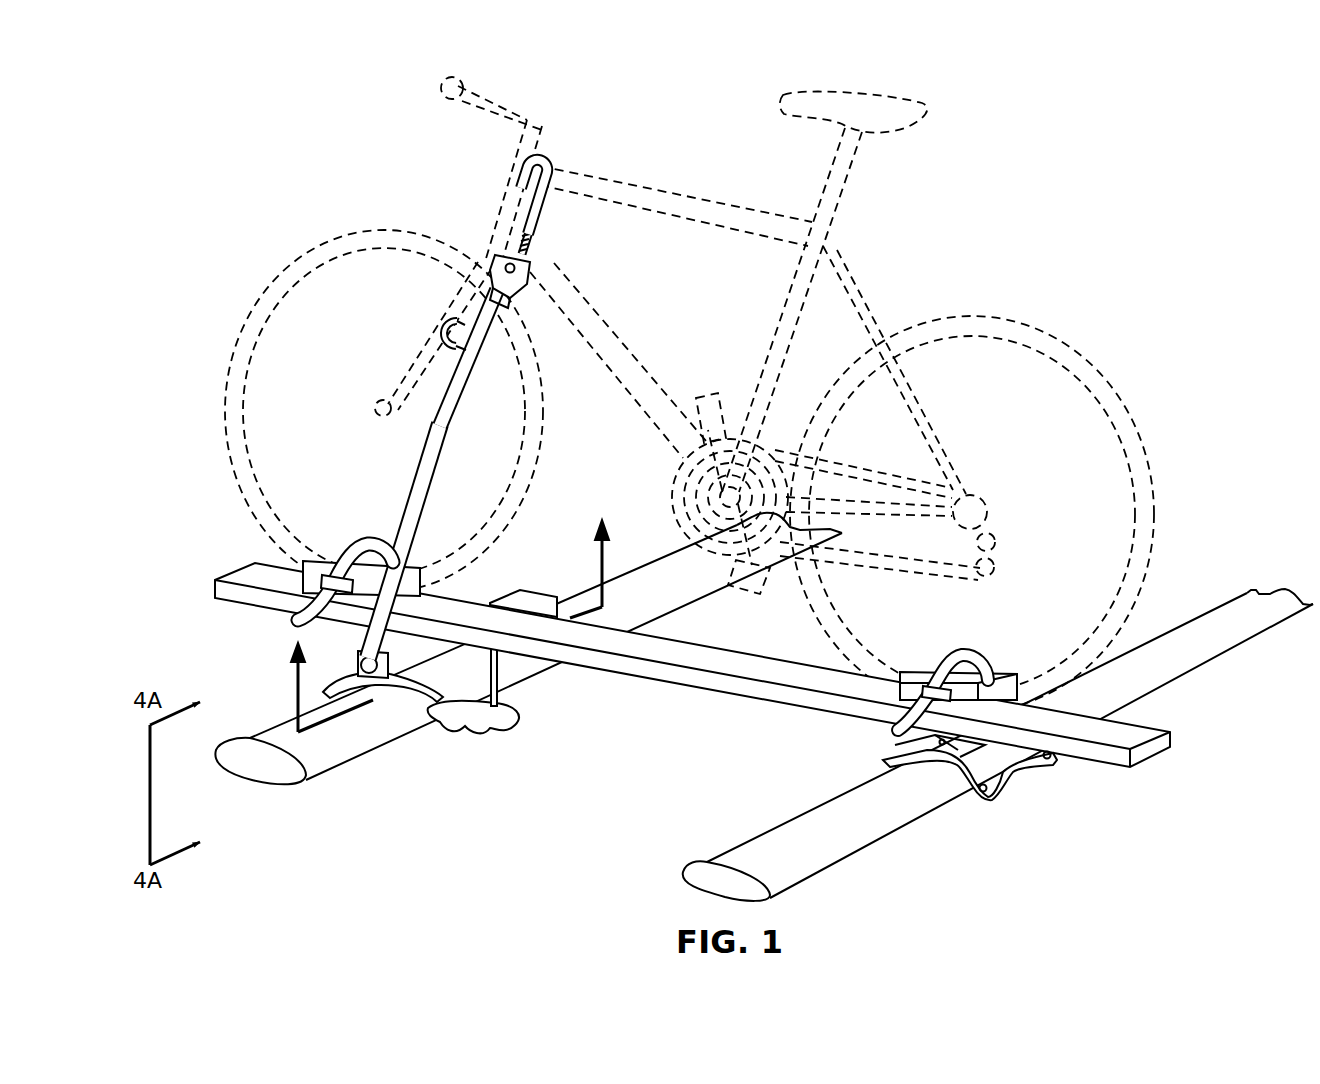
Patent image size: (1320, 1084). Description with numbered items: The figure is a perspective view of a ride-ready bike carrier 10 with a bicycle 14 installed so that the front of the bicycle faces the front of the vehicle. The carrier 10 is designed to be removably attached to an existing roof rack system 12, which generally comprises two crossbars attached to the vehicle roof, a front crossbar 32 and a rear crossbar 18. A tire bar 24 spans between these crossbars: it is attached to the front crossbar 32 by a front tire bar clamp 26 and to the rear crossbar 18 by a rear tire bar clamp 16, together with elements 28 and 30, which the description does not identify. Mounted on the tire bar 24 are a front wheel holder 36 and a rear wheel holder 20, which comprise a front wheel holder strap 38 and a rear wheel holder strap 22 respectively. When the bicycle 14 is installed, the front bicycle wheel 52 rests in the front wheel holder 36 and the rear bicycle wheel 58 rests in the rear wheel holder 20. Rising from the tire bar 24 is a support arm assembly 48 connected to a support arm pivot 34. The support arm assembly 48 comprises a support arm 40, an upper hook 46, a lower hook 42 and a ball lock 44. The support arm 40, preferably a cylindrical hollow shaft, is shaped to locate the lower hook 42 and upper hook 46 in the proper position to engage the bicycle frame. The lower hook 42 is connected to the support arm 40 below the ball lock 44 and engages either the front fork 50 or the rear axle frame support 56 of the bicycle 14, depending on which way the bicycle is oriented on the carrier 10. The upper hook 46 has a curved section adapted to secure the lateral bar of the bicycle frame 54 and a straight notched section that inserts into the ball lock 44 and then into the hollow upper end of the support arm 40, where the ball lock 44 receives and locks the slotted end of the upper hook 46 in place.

The ride-ready bike carrier 10 is at (691, 490).
The existing roof rack system 12 is at (767, 707).
The bicycle 14 is at (689, 387).
The rear tire bar clamp 16 is at (1035, 780).
The rear crossbar 18 is at (922, 820).
The rear wheel holder 20 is at (897, 704).
The rear wheel holder strap 22 is at (968, 662).
The tire bar 24 is at (762, 702).
The front tire bar clamp 26 is at (445, 728).
The clamp bolt 28 is at (503, 670).
The front mounting saddle 30 is at (432, 647).
The front crossbar 32 is at (380, 780).
The support arm pivot 34 is at (362, 663).
The front wheel holder 36 is at (300, 574).
The front wheel holder strap 38 is at (353, 540).
The support arm 40 is at (418, 482).
The lower hook 42 is at (443, 320).
The ball lock 44 is at (520, 292).
The upper hook 46 is at (547, 204).
The support arm assembly 48 is at (542, 270).
The front fork 50 is at (432, 370).
The front bicycle wheel 52 is at (332, 233).
The lateral bar of a bicycle frame 54 is at (652, 192).
The rear axle frame support 56 is at (856, 284).
The rear bicycle wheel 58 is at (1072, 346).